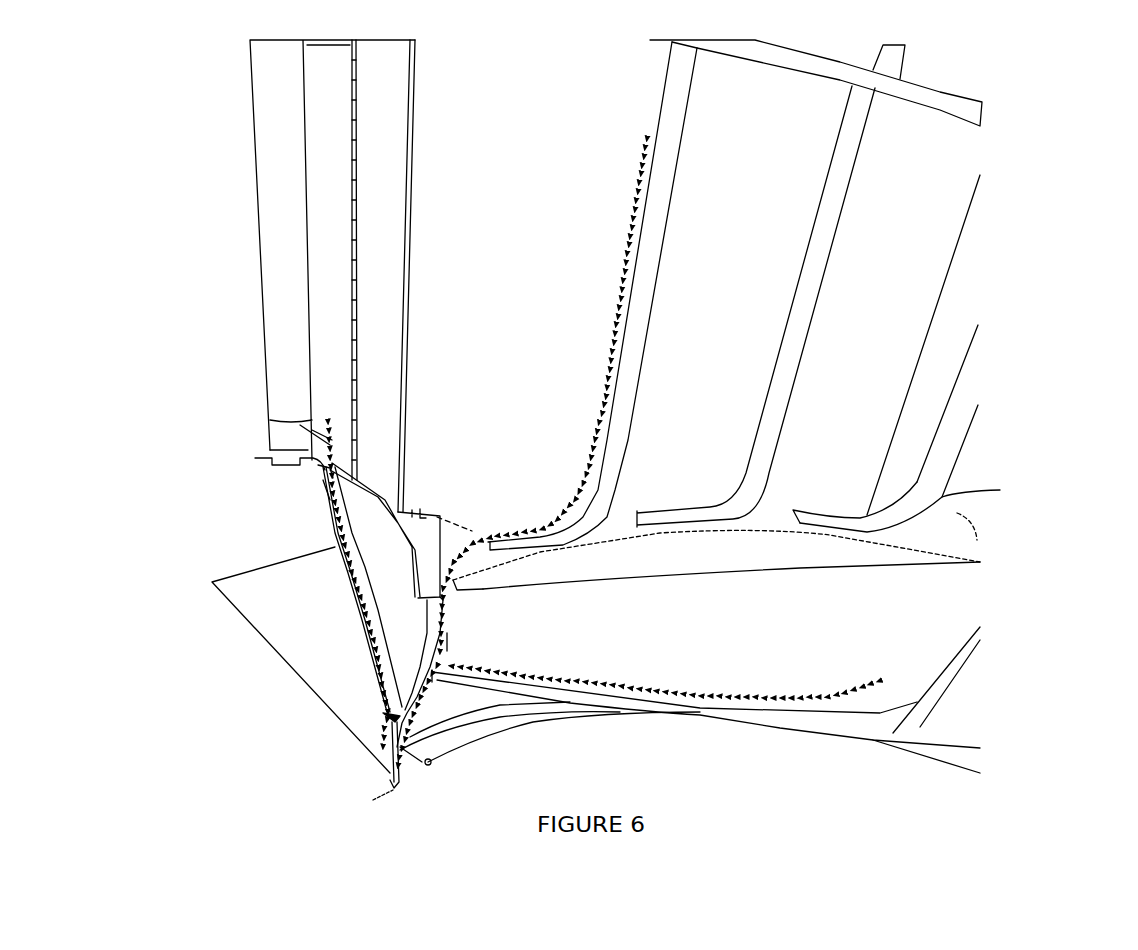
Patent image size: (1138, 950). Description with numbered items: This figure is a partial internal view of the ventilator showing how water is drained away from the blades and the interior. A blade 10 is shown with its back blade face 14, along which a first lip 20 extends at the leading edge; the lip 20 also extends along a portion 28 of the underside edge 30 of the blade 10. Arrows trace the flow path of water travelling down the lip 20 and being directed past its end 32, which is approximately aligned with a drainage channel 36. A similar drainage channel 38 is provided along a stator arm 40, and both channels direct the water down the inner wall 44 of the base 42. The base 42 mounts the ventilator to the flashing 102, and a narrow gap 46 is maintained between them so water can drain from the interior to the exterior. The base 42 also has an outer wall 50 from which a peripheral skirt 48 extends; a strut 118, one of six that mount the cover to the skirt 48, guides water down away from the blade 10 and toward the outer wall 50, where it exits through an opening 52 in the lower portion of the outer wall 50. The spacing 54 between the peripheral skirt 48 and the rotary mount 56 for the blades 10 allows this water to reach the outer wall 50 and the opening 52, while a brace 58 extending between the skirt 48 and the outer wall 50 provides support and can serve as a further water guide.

The blade 10 is at (907, 300).
The back blade face 14 is at (878, 353).
The first lip 20 is at (258, 457).
The portion of underside edge 28 is at (808, 530).
The underside edge 30 is at (767, 507).
The end of lip 32 is at (633, 513).
The drainage channel 36 is at (393, 777).
The drainage channel 38 is at (532, 677).
The stator arm 40 is at (820, 667).
The base 42 is at (450, 698).
The inner wall 44 is at (440, 605).
The narrow gap 46 is at (398, 790).
The peripheral skirt 48 is at (293, 468).
The outer wall 50 is at (323, 530).
The opening 52 is at (388, 718).
The spacing 54 is at (312, 492).
The rotary mount 56 is at (383, 495).
The brace 58 is at (310, 472).
The flashing 102 is at (405, 768).
The strut 118 is at (272, 246).